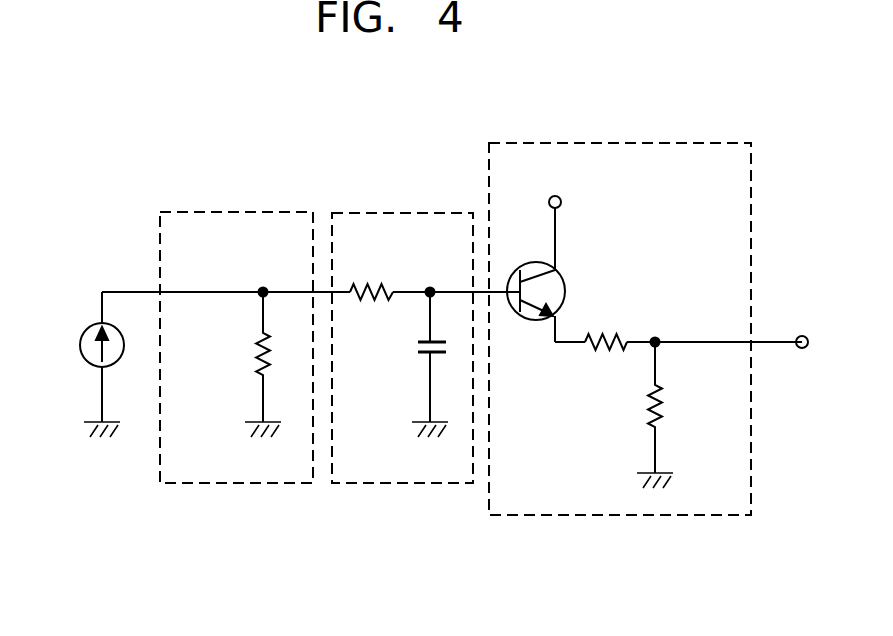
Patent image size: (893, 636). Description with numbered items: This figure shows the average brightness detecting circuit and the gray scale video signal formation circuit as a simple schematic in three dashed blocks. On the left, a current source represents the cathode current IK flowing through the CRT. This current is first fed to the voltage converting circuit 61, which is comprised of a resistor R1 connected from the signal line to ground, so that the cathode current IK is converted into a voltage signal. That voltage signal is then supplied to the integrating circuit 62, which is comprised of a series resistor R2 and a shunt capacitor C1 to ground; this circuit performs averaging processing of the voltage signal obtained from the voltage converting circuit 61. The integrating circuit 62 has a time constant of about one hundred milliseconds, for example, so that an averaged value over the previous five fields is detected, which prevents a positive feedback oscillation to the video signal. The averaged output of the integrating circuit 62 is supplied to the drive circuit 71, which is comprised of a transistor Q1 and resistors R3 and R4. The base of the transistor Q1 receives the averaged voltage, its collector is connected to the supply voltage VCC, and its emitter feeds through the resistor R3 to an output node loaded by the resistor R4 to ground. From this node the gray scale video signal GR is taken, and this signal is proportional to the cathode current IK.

The voltage converting circuit 61 is at (232, 485).
The integrating circuit 62 is at (413, 485).
The drive circuit 71 is at (655, 517).
The cathode current IK is at (85, 364).
The resistor R1 is at (256, 361).
The resistor R2 is at (371, 282).
The capacitor C1 is at (416, 344).
The transistor Q1 is at (567, 286).
The supply voltage VCC is at (553, 185).
The gray scale video signal GR is at (800, 325).
The resistor R3 is at (606, 352).
The resistor R4 is at (662, 407).